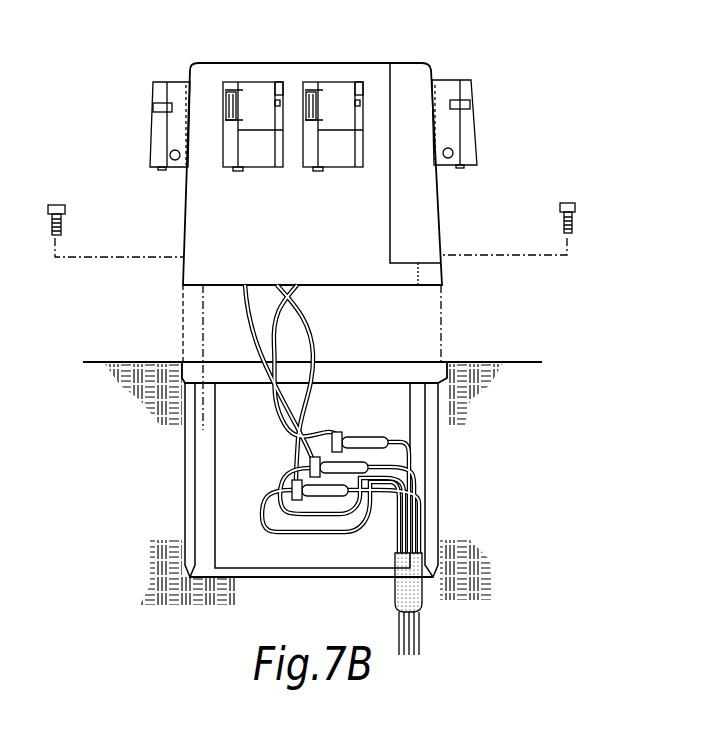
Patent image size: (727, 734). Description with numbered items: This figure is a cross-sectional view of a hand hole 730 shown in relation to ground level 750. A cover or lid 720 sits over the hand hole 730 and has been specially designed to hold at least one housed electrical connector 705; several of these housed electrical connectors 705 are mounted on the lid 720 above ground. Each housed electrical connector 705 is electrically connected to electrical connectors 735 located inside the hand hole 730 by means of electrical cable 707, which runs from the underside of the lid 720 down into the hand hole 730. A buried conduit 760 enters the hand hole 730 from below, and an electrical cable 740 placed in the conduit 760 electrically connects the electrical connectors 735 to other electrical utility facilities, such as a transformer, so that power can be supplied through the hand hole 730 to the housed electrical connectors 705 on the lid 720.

The housed electrical connector 705 is at (262, 86).
The electrical cable 707 is at (312, 342).
The lid 720 is at (430, 222).
The hand hole 730 is at (190, 487).
The electrical connectors 735 is at (288, 441).
The electrical cable 740 is at (420, 632).
The ground level 750 is at (487, 362).
The buried conduit 760 is at (395, 590).